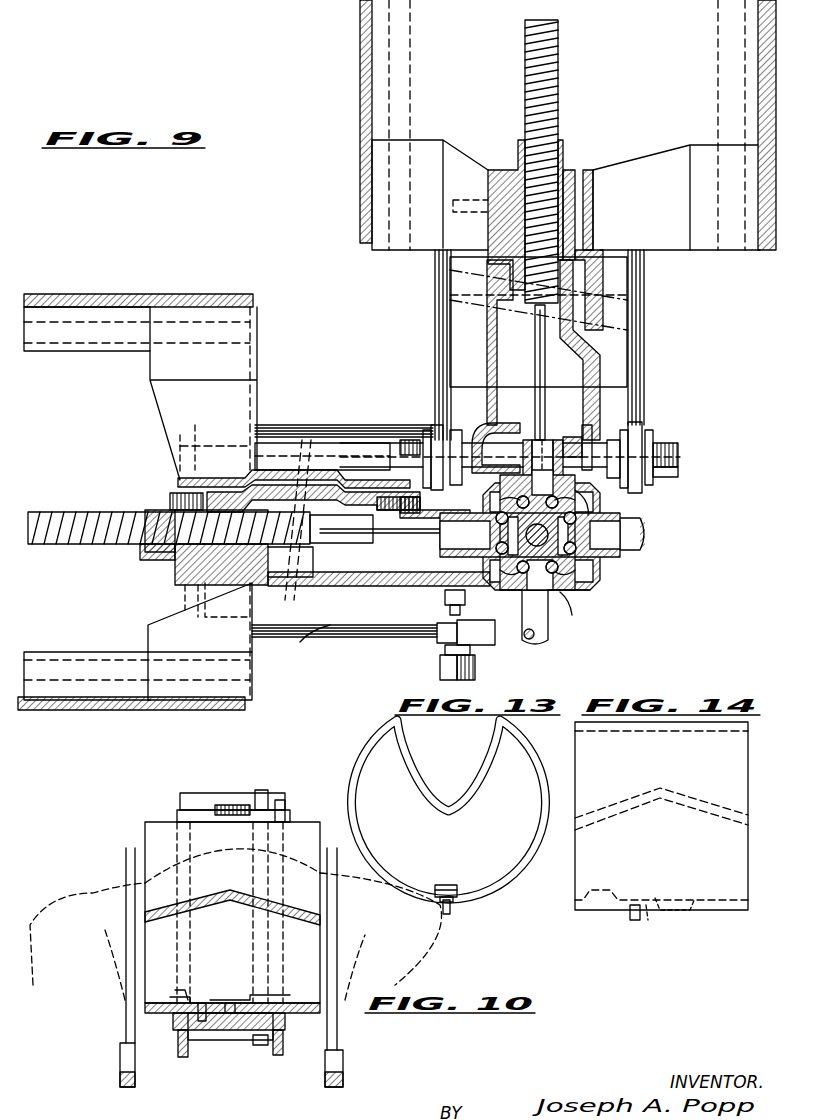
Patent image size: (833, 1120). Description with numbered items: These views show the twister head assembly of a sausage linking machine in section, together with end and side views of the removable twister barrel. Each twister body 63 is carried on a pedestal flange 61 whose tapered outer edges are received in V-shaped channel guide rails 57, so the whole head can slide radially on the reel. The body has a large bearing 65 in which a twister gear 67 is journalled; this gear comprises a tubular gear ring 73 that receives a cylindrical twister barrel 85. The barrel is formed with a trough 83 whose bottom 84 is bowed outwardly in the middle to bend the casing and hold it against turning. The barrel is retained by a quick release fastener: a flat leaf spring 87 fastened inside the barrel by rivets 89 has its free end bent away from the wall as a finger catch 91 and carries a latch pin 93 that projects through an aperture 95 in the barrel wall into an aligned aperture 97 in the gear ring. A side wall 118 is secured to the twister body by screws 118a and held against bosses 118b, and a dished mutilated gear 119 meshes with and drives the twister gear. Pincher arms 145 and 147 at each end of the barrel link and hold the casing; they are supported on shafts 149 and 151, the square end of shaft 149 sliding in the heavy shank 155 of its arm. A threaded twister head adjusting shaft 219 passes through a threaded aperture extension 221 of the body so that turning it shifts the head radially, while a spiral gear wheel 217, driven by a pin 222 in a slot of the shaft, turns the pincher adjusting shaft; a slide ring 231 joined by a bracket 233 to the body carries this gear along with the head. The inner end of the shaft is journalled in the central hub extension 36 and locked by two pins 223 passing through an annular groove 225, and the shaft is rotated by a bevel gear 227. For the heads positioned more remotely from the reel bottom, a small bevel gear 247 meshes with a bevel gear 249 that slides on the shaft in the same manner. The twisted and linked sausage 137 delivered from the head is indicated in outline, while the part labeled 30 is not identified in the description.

In FIG. 9, the gear hub 30 is at (585, 555).
In FIG. 9, the central hub extension 36 is at (578, 570).
In FIG. 9, the guide rail 57 is at (360, 62).
In FIG. 9, the pedestal flange 61 is at (458, 140).
In FIG. 9, the twister body 63 is at (498, 170).
In FIG. 10, the bearing 65 is at (180, 1052).
In FIG. 10, the twister gear 67 is at (262, 792).
In FIG. 10, the gear ring 73 is at (215, 1035).
In FIG. 13, the trough 83 is at (487, 755).
In FIG. 9, the bottom of the trough 84 is at (309, 645).
In FIG. 13, the bottom of the trough 84 is at (428, 778).
In FIG. 14, the bottom of the trough 84 is at (705, 800).
In FIG. 10, the bottom of the trough 84 is at (225, 893).
In FIG. 9, the twister barrel 85 is at (465, 270).
In FIG. 13, the twister barrel 85 is at (368, 764).
In FIG. 14, the twister barrel 85 is at (750, 760).
In FIG. 10, the twister barrel 85 is at (305, 1015).
In FIG. 10, the leaf spring 87 is at (230, 1000).
In FIG. 10, the rivets 89 is at (240, 995).
In FIG. 13, the finger catch 91 is at (445, 885).
In FIG. 14, the finger catch 91 is at (580, 896).
In FIG. 10, the finger catch 91 is at (178, 988).
In FIG. 13, the latch pin 93 is at (452, 910).
In FIG. 14, the latch pin 93 is at (632, 918).
In FIG. 10, the latch pin 93 is at (205, 1000).
In FIG. 13, the aperture 95 is at (440, 903).
In FIG. 14, the aperture 95 is at (666, 918).
In FIG. 10, the aperture 95 is at (185, 998).
In FIG. 10, the aperture 97 is at (215, 1038).
In FIG. 9, the side wall 118 is at (178, 482).
In FIG. 9, the screws 118a is at (178, 476).
In FIG. 10, the screws 118a is at (235, 805).
In FIG. 10, the bosses 118b is at (215, 795).
In FIG. 9, the mutilated gear 119 is at (172, 500).
In FIG. 10, the twisted and linked sausage 137 is at (70, 893).
In FIG. 9, the pincher arm 145 is at (435, 350).
In FIG. 10, the pincher arm 145 is at (126, 1026).
In FIG. 9, the pincher arm 147 is at (435, 305).
In FIG. 9, the shaft 149 is at (678, 472).
In FIG. 9, the pincher adjusting shaft 151 is at (680, 452).
In FIG. 10, the shank 155 is at (120, 1076).
In FIG. 9, the gear wheel 217 is at (575, 430).
In FIG. 9, the twister head adjusting shaft 219 is at (560, 60).
In FIG. 9, the threaded aperture extension 221 is at (165, 565).
In FIG. 9, the pin 222 is at (535, 320).
In FIG. 9, the pins 223 is at (572, 596).
In FIG. 9, the annular groove 225 is at (570, 142).
In FIG. 9, the bevel gear 227 is at (585, 490).
In FIG. 9, the slide ring 231 is at (598, 496).
In FIG. 9, the bracket 233 is at (475, 440).
In FIG. 9, the small bevel gear 247 is at (443, 479).
In FIG. 9, the bevel gear 249 is at (448, 606).